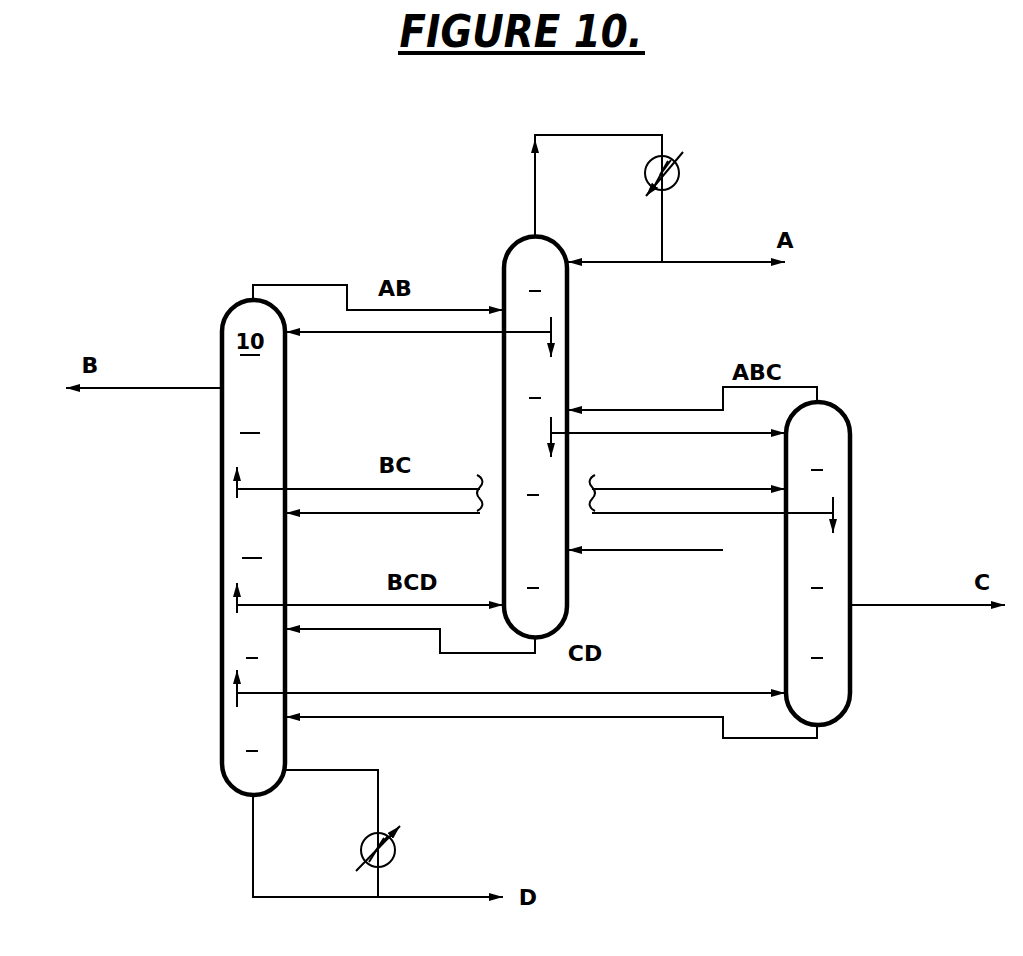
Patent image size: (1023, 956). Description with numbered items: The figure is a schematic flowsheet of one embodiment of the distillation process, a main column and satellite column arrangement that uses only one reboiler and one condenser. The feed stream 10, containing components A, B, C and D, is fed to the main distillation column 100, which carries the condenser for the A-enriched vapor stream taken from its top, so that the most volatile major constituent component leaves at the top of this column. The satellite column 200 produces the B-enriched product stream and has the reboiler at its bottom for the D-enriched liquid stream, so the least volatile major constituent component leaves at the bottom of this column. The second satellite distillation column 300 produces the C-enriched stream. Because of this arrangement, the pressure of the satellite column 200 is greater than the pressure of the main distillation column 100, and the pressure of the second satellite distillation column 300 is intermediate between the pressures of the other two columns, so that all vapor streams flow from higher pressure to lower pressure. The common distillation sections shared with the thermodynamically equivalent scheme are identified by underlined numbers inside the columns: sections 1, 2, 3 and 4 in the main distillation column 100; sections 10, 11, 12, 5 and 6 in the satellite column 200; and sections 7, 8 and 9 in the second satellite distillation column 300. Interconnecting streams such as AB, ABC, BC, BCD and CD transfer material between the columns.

The main distillation column 100 is at (568, 378).
The satellite column 200 is at (286, 440).
The second satellite distillation column 300 is at (852, 543).
The column section 1 is at (535, 278).
The column section 2 is at (535, 385).
The column section 3 is at (533, 482).
The column section 4 is at (533, 575).
The column section 5 is at (252, 645).
The column section 6 is at (252, 738).
The column section 7 is at (817, 457).
The column section 8 is at (817, 575).
The column section 9 is at (817, 645).
The feed stream 10 is at (703, 553).
The column section 11 is at (249, 420).
The column section 12 is at (251, 545).